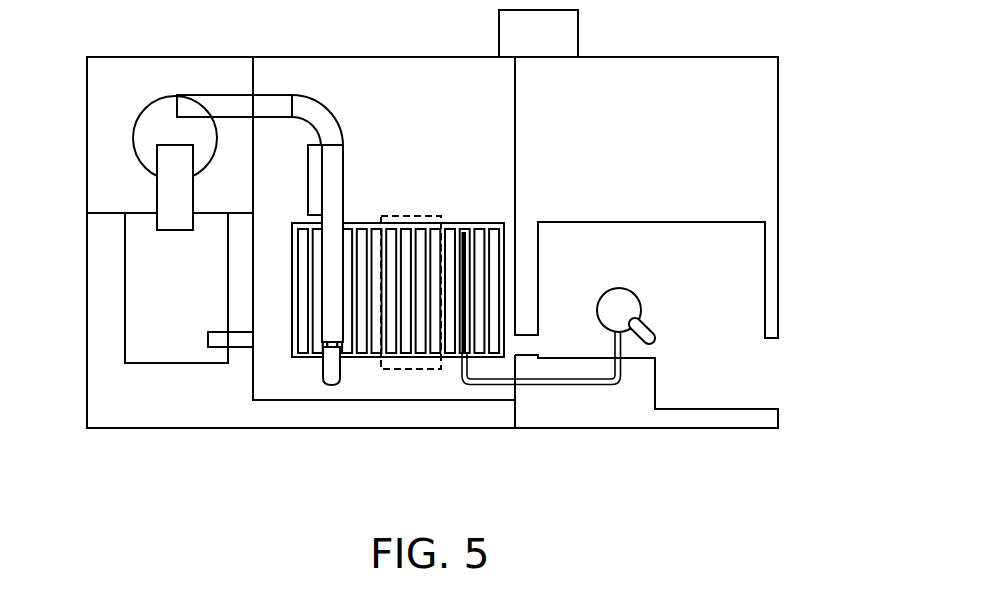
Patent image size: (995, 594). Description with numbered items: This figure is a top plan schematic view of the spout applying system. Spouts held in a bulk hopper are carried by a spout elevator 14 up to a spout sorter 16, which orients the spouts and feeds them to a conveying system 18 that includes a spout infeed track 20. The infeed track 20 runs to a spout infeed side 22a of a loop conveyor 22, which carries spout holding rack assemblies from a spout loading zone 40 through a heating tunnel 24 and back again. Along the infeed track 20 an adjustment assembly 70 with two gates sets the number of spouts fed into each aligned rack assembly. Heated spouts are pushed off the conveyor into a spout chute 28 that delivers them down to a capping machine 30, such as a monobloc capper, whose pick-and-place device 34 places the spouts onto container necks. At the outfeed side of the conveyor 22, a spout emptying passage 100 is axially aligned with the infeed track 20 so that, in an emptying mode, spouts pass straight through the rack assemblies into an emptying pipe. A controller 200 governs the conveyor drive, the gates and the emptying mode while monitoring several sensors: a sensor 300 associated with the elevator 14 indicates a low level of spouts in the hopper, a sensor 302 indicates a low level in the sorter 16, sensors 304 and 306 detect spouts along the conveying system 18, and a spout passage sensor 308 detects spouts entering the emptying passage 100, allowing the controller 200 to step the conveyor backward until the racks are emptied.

The controller 200 is at (560, 48).
The conveying system 18 is at (223, 93).
The sensor 304 is at (296, 82).
The sensor 302 is at (153, 115).
The spout sorter 16 is at (133, 145).
The sensor 300 is at (131, 243).
The spout elevator 14 is at (123, 303).
The sensor 306 is at (305, 215).
The adjustment assembly 70 is at (307, 170).
The spout infeed track 20 is at (345, 150).
The spout loading zone 40 is at (345, 185).
The conveyor 22 is at (288, 343).
The spout infeed side 22a is at (450, 215).
The heating tunnel 24 is at (413, 362).
The spout chute 28 is at (588, 387).
The pick-and-place device 34 is at (643, 298).
The capping machine 30 is at (768, 220).
The spout passage sensor 308 is at (309, 385).
The spout emptying passage 100 is at (333, 385).